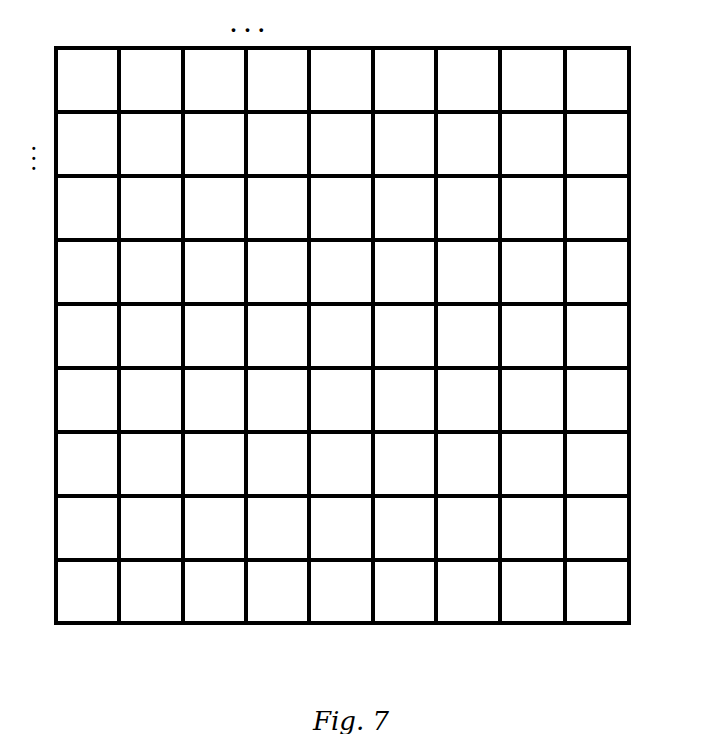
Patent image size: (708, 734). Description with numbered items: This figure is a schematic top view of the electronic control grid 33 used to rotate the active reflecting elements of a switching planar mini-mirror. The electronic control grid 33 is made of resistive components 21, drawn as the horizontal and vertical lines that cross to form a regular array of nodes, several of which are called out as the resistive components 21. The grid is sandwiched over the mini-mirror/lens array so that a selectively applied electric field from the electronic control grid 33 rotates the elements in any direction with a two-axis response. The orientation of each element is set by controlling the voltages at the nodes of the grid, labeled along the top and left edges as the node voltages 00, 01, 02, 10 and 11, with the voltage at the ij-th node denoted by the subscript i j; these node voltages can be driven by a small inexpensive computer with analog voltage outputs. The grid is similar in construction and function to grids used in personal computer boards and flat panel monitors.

The resistive component 21 is at (632, 280).
The electronic control grid 33 is at (349, 342).
The node voltage V00 00 is at (78, 62).
The node voltage V01 01 is at (142, 62).
The node voltage V02 02 is at (207, 62).
The node voltage V10 10 is at (68, 137).
The node voltage V11 11 is at (134, 131).